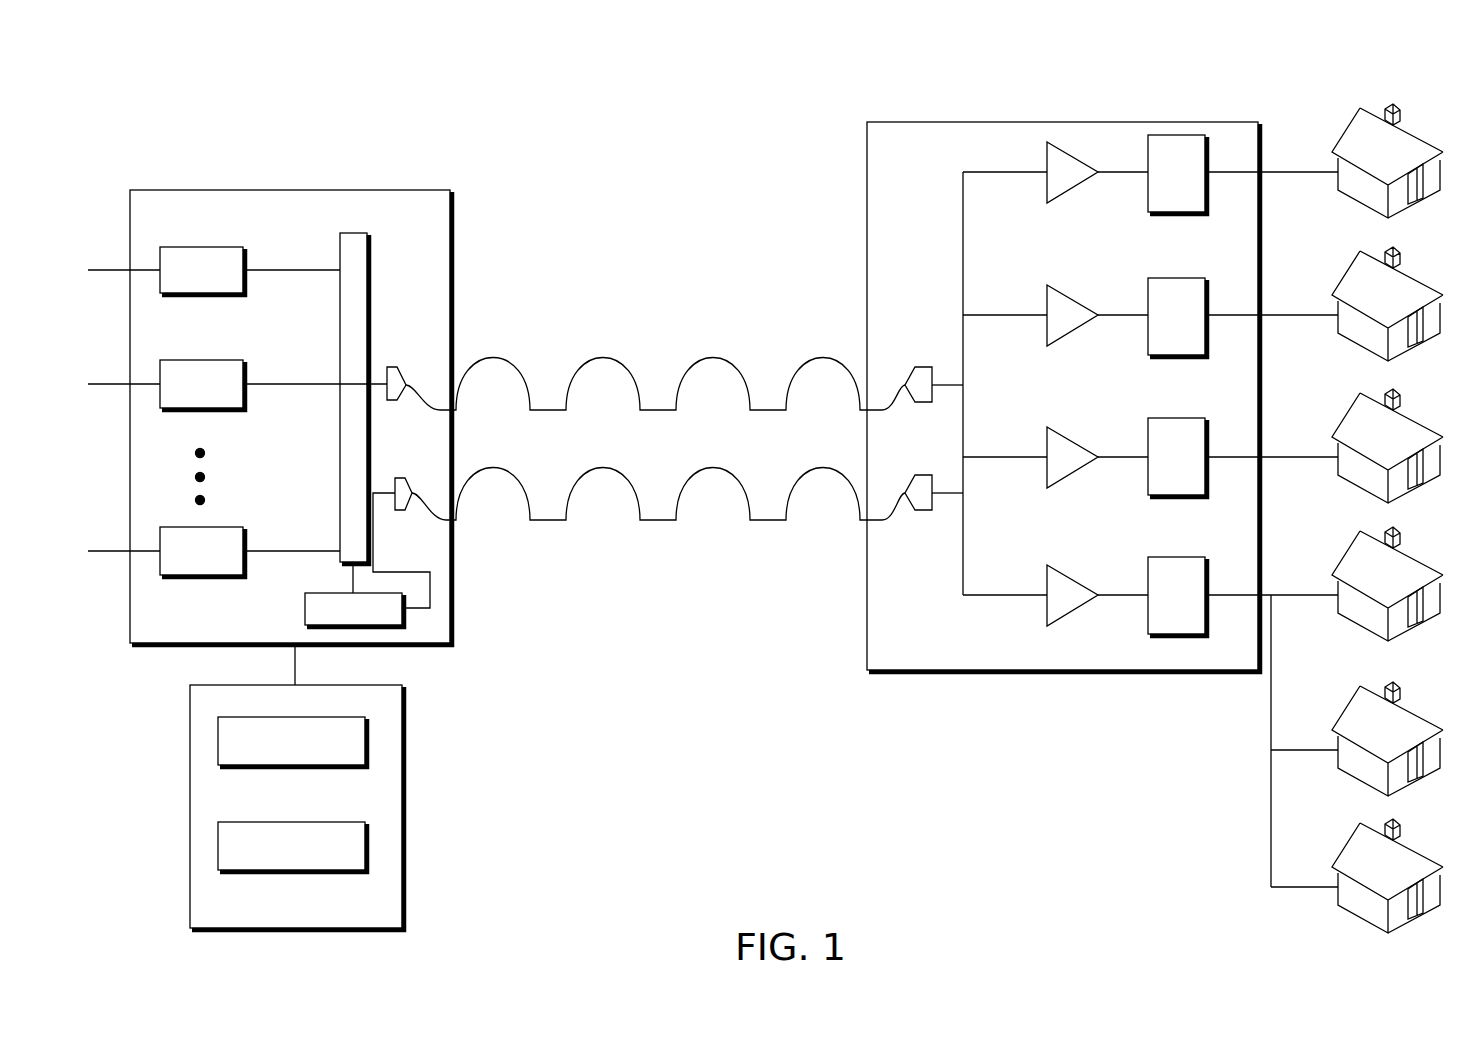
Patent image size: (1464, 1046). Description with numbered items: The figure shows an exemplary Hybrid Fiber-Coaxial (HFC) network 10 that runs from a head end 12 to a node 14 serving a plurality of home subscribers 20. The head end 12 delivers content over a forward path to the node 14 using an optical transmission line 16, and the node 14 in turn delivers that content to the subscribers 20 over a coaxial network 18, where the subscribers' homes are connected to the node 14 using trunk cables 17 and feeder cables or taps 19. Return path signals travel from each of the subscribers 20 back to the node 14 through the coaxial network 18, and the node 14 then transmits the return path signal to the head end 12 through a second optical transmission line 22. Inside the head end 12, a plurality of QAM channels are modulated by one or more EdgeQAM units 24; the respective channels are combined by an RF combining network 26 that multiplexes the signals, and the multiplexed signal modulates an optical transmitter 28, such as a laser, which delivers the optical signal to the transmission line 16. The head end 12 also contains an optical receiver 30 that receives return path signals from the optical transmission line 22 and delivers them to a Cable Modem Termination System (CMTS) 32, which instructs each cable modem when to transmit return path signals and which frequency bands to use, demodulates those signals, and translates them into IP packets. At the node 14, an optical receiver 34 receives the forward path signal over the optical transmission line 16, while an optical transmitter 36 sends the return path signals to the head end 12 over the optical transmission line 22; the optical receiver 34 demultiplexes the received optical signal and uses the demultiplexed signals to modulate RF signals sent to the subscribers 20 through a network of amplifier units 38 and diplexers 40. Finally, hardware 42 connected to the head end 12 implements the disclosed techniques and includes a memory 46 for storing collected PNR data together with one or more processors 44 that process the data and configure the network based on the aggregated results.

The Hybrid Fiber-Coaxial (HFC) network 10 is at (170, 121).
The head end 12 is at (290, 190).
The node 14 is at (1063, 122).
The optical transmission line 16 is at (712, 355).
The trunk cables 17 is at (1270, 805).
The coaxial network 18 is at (1296, 152).
The taps 19 is at (1298, 595).
The subscribers 20 is at (1433, 112).
The optical transmission line 22 is at (765, 521).
The EdgeQAM units 24 is at (203, 247).
The RF combining network 26 is at (370, 255).
The optical transmitter 28 is at (395, 367).
The optical receiver 30 is at (402, 478).
The Cable Modem Termination System (CMTS) 32 is at (305, 608).
The optical receiver 34 is at (920, 367).
The optical transmitter 36 is at (924, 510).
The amplifier units 38 is at (1073, 187).
The diplexers 40 is at (1176, 214).
The hardware 42 is at (405, 732).
The processors 44 is at (310, 767).
The memory 46 is at (310, 872).